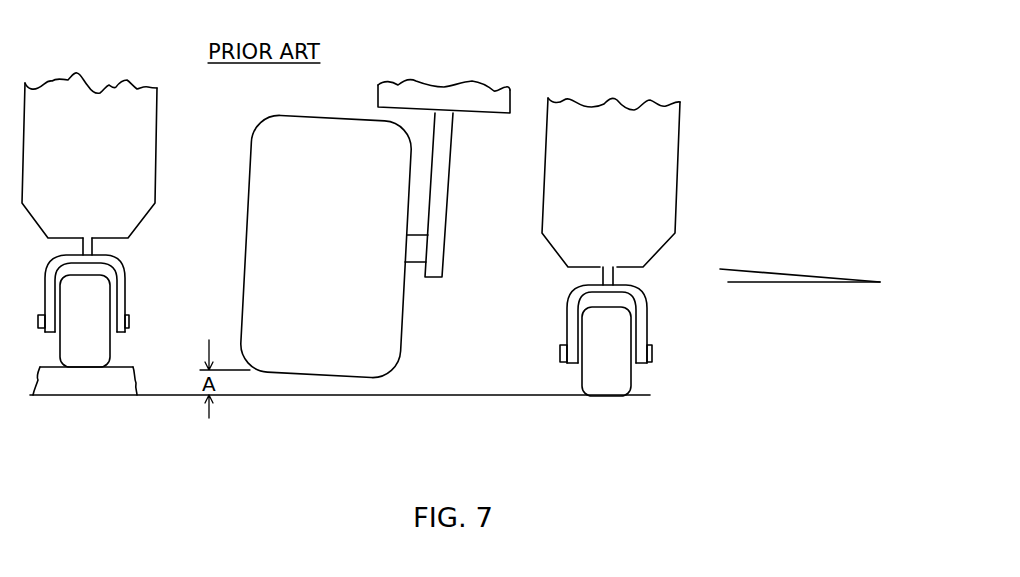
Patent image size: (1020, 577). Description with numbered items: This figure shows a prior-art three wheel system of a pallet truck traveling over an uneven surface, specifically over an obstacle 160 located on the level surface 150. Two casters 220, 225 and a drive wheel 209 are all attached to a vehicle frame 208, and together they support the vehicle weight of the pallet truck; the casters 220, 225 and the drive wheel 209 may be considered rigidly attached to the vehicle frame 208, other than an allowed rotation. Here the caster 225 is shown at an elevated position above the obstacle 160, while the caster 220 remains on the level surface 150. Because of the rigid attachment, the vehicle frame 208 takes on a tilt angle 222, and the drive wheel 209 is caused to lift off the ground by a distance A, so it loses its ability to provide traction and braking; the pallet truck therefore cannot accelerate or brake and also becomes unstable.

The vehicle frame 208 is at (157, 90).
The drive wheel 209 is at (248, 212).
The caster 225 is at (112, 305).
The obstacle 160 is at (140, 372).
The caster 220 is at (583, 325).
The level surface 150 is at (522, 398).
The tilt angle 222 is at (748, 323).